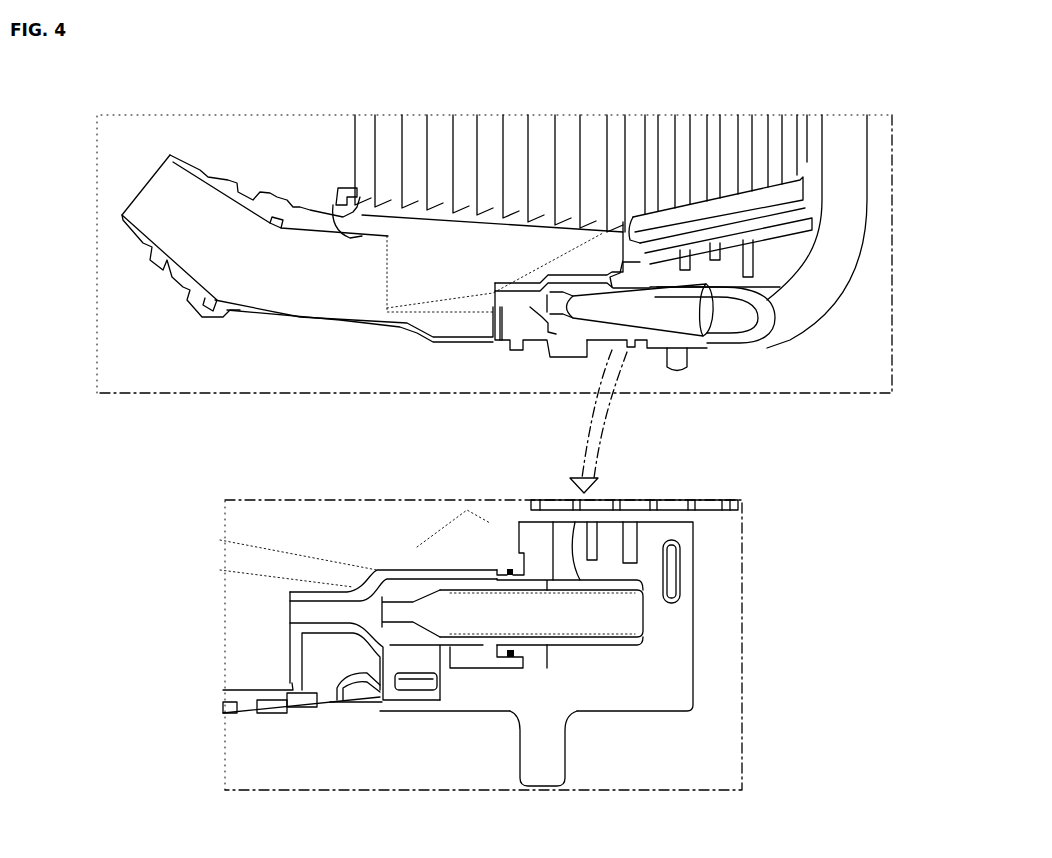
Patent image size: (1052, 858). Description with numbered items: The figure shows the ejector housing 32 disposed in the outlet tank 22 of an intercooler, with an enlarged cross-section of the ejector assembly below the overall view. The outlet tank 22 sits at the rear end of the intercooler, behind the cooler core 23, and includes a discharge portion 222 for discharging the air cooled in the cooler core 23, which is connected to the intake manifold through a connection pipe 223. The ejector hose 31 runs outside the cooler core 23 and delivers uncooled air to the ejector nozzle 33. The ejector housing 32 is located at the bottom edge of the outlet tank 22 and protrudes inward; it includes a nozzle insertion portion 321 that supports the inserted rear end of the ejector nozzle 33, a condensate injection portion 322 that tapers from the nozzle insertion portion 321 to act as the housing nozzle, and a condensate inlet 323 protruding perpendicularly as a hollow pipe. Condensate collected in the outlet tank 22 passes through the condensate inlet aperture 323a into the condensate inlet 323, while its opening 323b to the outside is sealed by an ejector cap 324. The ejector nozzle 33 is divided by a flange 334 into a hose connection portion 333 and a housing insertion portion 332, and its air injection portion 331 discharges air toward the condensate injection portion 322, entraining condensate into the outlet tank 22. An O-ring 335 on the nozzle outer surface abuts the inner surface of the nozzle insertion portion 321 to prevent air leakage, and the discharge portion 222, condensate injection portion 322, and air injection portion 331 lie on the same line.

The outlet tank 22 is at (427, 337).
The discharge portion 222 is at (265, 313).
The connection pipe 223 is at (192, 155).
The cooler core 23 is at (357, 147).
The ejector hose 31 is at (840, 253).
The ejector housing 32 is at (523, 325).
The nozzle insertion portion 321 is at (457, 570).
The condensate injection portion 322 is at (308, 592).
The condensate inlet 323 is at (343, 700).
The condensate inlet aperture 323a is at (377, 707).
The opening 323b is at (430, 702).
The ejector cap 324 is at (567, 357).
The ejector nozzle 33 is at (670, 327).
The air injection portion 331 is at (392, 600).
The housing insertion portion 332 is at (470, 663).
The hose connection portion 333 is at (607, 645).
The flange 334 is at (537, 660).
The O-ring 335 is at (512, 570).